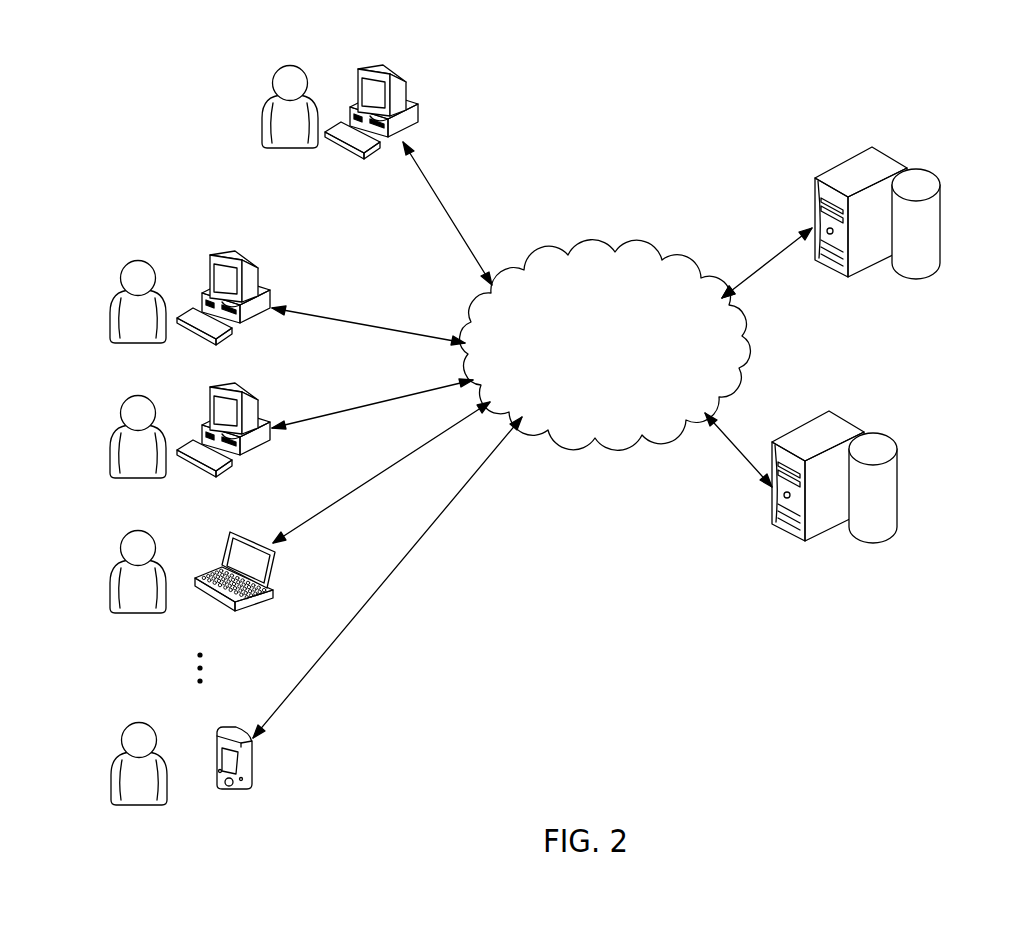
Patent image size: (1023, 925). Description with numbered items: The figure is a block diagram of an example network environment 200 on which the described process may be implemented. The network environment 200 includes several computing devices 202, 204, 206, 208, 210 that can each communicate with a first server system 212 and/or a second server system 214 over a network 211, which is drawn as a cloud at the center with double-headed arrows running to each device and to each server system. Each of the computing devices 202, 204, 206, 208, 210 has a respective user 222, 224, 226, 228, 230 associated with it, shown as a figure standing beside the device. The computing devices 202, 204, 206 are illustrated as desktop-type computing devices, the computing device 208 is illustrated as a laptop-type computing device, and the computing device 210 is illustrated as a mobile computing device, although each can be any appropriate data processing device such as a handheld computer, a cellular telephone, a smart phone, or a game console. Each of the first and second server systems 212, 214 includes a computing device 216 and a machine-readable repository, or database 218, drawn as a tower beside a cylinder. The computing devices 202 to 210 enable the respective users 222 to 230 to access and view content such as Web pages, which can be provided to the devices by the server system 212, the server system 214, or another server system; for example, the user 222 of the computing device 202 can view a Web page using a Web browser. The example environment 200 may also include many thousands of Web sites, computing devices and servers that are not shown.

The network environment 200 is at (714, 120).
The computing device 202 is at (378, 68).
The computing device 204 is at (227, 253).
The computing device 206 is at (227, 385).
The laptop-type computing device 208 is at (233, 532).
The mobile computing device 210 is at (217, 730).
The network 211 is at (618, 252).
The first server system 212 is at (818, 284).
The second server system 214 is at (776, 548).
The computing device 216 is at (888, 163).
The database 218 is at (940, 215).
The user 222 is at (270, 96).
The user 224 is at (146, 261).
The user 226 is at (147, 396).
The user 228 is at (147, 531).
The user 230 is at (147, 723).